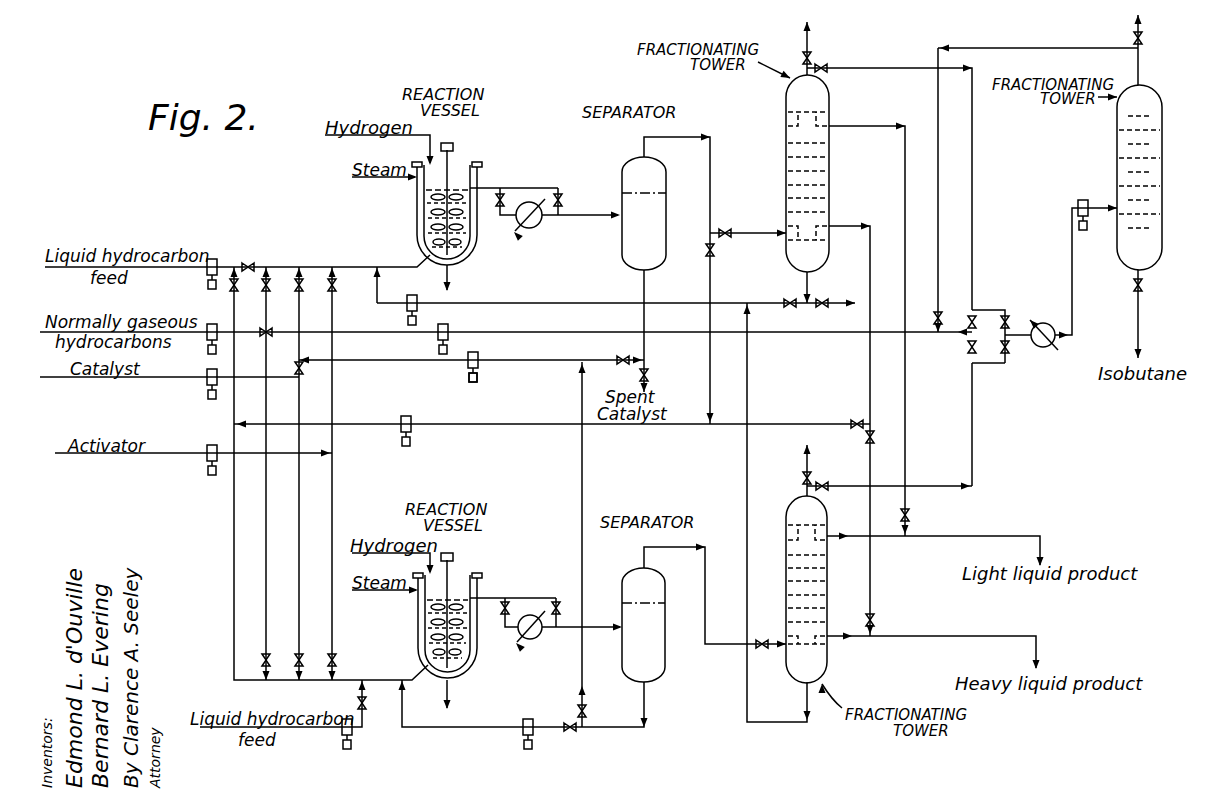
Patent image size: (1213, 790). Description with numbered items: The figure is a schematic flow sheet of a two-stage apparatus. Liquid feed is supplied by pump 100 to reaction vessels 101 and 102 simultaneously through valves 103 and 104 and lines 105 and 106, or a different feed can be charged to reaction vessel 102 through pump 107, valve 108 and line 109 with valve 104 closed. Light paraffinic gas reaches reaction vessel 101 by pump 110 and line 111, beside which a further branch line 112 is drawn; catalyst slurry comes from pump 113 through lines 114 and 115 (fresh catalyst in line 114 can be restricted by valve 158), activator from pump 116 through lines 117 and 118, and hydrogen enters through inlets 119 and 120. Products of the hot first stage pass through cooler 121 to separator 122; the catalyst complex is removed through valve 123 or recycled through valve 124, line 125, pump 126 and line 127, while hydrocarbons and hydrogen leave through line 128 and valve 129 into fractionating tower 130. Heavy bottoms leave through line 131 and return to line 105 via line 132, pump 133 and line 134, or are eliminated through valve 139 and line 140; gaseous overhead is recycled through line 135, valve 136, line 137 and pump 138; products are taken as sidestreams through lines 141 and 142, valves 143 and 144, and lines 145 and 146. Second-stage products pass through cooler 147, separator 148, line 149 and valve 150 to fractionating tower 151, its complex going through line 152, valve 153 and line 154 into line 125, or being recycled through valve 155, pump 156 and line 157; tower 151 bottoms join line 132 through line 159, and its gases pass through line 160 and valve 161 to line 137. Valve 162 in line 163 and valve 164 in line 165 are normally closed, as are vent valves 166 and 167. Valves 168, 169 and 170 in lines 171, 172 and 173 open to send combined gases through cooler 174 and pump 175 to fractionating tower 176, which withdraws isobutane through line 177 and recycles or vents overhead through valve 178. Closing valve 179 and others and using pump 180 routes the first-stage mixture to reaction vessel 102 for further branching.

The pump 100 is at (214, 258).
The reaction vessel 101 is at (417, 202).
The reaction vessel 102 is at (418, 617).
The valve 103 is at (249, 263).
The valve 104 is at (238, 290).
The line 105 is at (380, 266).
The line 106 is at (234, 533).
The pump 107 is at (345, 751).
The valve 108 is at (364, 708).
The line 109 is at (360, 694).
The pump 110 is at (208, 322).
The line 111 is at (268, 292).
The branch line 112 is at (266, 548).
The pump 113 is at (206, 396).
The line 114 is at (302, 290).
The line 115 is at (299, 585).
The pump 116 is at (212, 446).
The line 117 is at (333, 300).
The line 118 is at (332, 624).
The inlet 119 is at (327, 140).
The inlet 120 is at (352, 556).
The cooler 121 is at (518, 232).
The separator 122 is at (624, 160).
The valve 123 is at (648, 378).
The valve 124 is at (621, 357).
The line 125 is at (545, 362).
The pump 126 is at (473, 384).
The line 127 is at (386, 366).
The line 128 is at (712, 150).
The valve 129 is at (730, 230).
The fractionating tower 130 is at (786, 92).
The line 131 is at (810, 283).
The line 132 is at (588, 303).
The pump 133 is at (407, 320).
The line 134 is at (378, 286).
The line 135 is at (896, 68).
The valve 136 is at (968, 320).
The line 137 is at (592, 328).
The pump 138 is at (462, 320).
The valve 139 is at (820, 310).
The line 140 is at (845, 309).
The line 141 is at (852, 224).
The line 142 is at (880, 130).
The valve 143 is at (876, 618).
The valve 144 is at (908, 515).
The line 145 is at (1003, 636).
The line 146 is at (1010, 536).
The cooler 147 is at (522, 642).
The separator 148 is at (632, 570).
The line 149 is at (706, 570).
The valve 150 is at (766, 638).
The fractionating tower 151 is at (800, 498).
The line 152 is at (646, 702).
The valve 153 is at (586, 712).
The line 154 is at (582, 492).
The valve 155 is at (572, 732).
The pump 156 is at (527, 719).
The line 157 is at (404, 710).
The valve 158 is at (304, 376).
The line 159 is at (747, 678).
The line 160 is at (975, 437).
The valve 161 is at (968, 350).
The valve 162 is at (716, 252).
The line 163 is at (708, 396).
The valve 164 is at (852, 420).
The line 165 is at (652, 432).
The vent valve 166 is at (812, 58).
The vent valve 167 is at (804, 474).
The valve 168 is at (1010, 318).
The valve 169 is at (1010, 352).
The valve 170 is at (934, 312).
The line 171 is at (982, 308).
The line 172 is at (985, 365).
The line 173 is at (1046, 50).
The cooler 174 is at (1045, 350).
The pump 175 is at (1083, 200).
The fractionating tower 176 is at (1117, 132).
The line 177 is at (1140, 318).
The valve 178 is at (1143, 40).
The valve 179 is at (786, 310).
The pump 180 is at (404, 446).